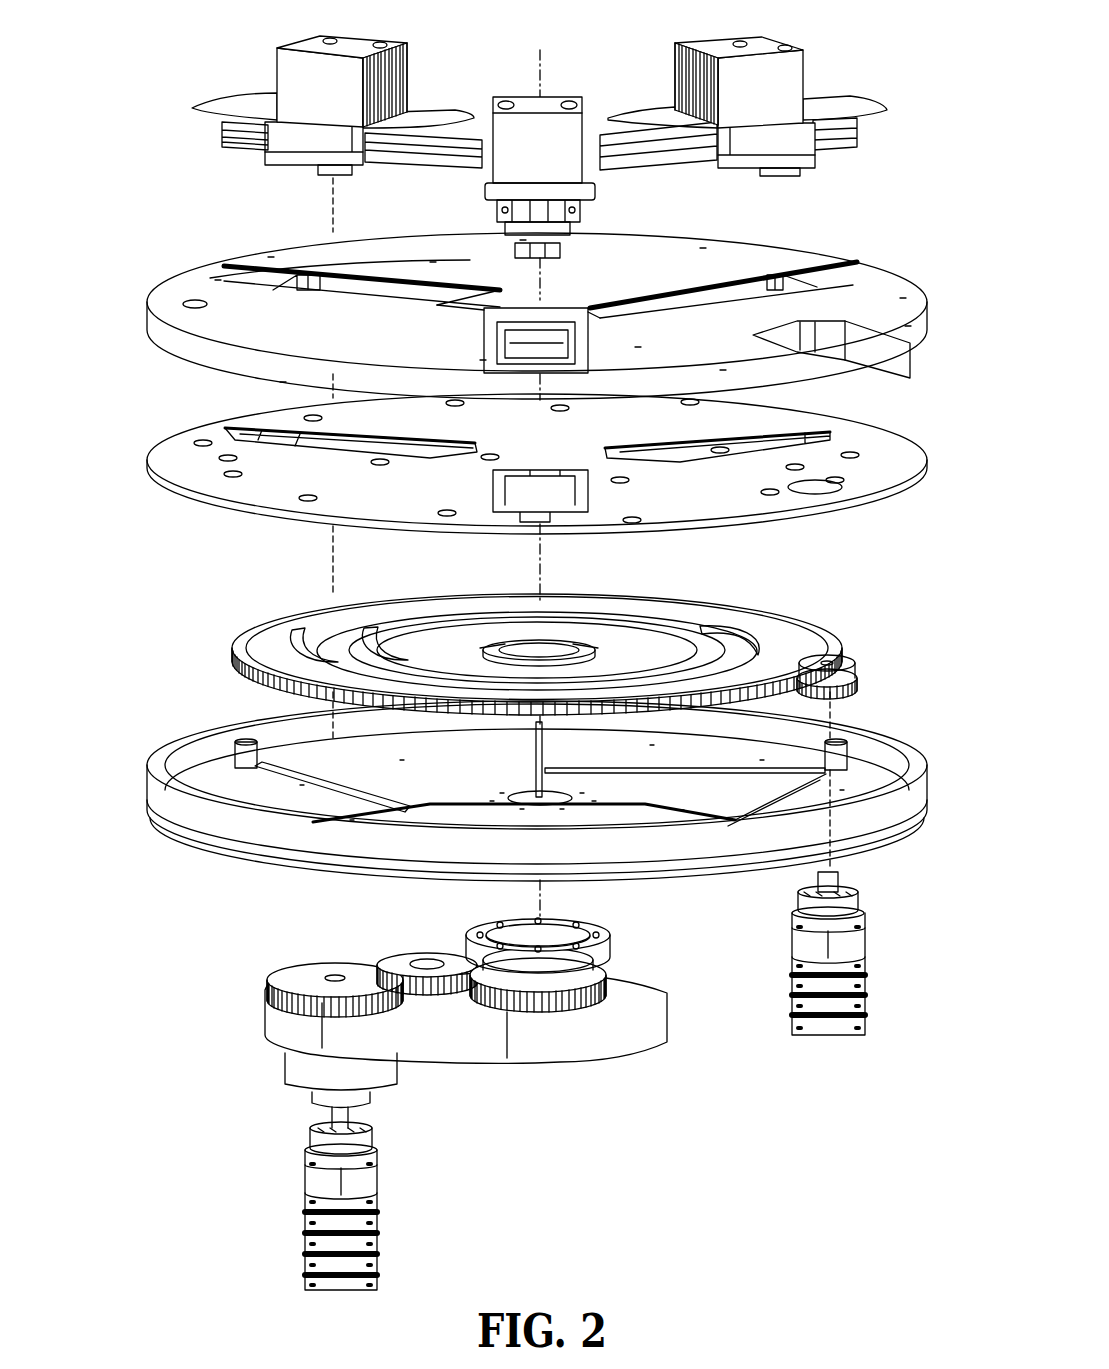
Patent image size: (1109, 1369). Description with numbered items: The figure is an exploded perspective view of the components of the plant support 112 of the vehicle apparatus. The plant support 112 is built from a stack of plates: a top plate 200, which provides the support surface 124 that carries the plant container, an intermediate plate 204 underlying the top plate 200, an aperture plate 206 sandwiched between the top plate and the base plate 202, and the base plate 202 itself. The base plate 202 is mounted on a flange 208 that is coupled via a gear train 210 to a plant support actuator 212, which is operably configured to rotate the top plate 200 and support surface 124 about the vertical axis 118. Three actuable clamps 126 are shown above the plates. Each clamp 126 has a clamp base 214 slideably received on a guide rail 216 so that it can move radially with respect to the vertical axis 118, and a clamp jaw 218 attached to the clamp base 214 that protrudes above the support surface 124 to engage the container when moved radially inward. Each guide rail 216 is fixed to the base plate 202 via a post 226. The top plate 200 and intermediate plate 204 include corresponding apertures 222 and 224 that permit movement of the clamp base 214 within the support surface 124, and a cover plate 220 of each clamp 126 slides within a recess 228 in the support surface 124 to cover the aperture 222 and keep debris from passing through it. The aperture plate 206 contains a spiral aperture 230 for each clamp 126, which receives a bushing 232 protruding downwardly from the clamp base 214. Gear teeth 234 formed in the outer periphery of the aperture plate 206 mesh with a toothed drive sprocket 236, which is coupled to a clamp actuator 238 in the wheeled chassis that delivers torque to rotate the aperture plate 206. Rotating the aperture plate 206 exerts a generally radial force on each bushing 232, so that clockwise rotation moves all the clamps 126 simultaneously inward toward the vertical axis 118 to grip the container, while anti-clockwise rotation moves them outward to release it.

The plant support 112 is at (112, 44).
The vertical axis 118 is at (530, 62).
The support surface 124 is at (866, 300).
The actuable clamp 126 is at (541, 129).
The top plate 200 is at (527, 297).
The base plate 202 is at (498, 791).
The intermediate plate 204 is at (498, 456).
The aperture plate 206 is at (456, 636).
The flange 208 is at (596, 944).
The gear train 210 is at (575, 1000).
The plant support actuator 212 is at (305, 1183).
The clamp base 214 is at (772, 145).
The guide rail 216 is at (820, 130).
The clamp jaw 218 is at (678, 80).
The cover plate 220 is at (836, 106).
The aperture 222 is at (373, 288).
The aperture 224 is at (300, 432).
The post 226 is at (236, 736).
The recess 228 is at (222, 273).
The spiral aperture 230 is at (307, 650).
The bushing 232 is at (333, 176).
The gear teeth 234 is at (262, 678).
The drive sprocket 236 is at (845, 682).
The clamp actuator 238 is at (866, 948).